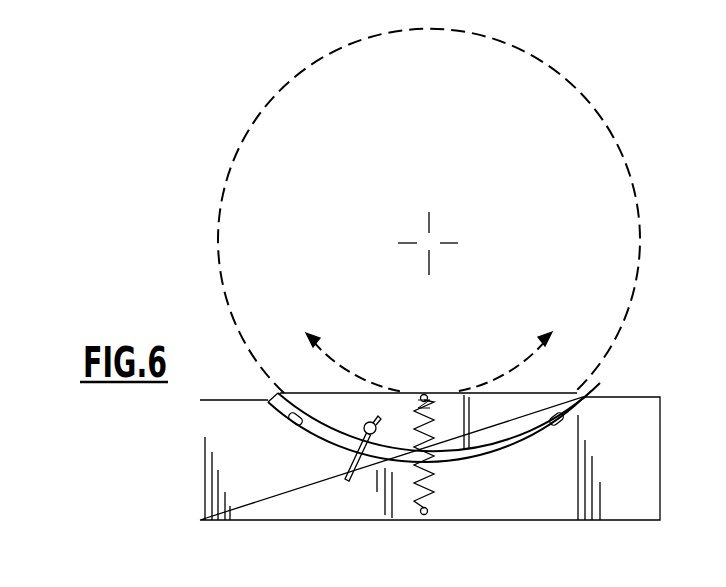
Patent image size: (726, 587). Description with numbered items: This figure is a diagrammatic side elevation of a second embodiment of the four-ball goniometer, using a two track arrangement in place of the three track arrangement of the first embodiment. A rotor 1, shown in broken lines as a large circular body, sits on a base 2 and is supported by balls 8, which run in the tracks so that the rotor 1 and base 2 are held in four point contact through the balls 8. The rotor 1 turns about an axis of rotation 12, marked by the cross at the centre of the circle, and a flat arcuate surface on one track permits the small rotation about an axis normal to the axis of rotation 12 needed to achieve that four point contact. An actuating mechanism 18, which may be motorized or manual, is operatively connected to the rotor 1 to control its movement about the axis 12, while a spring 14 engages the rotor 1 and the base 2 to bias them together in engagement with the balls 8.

The rotor 1 is at (323, 408).
The base 2 is at (202, 452).
The balls 8 is at (293, 421).
The axis of rotation 12 is at (437, 234).
The spring 14 is at (437, 467).
The actuating mechanism 18 is at (346, 482).